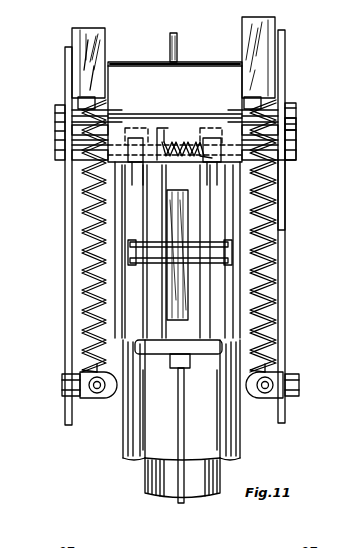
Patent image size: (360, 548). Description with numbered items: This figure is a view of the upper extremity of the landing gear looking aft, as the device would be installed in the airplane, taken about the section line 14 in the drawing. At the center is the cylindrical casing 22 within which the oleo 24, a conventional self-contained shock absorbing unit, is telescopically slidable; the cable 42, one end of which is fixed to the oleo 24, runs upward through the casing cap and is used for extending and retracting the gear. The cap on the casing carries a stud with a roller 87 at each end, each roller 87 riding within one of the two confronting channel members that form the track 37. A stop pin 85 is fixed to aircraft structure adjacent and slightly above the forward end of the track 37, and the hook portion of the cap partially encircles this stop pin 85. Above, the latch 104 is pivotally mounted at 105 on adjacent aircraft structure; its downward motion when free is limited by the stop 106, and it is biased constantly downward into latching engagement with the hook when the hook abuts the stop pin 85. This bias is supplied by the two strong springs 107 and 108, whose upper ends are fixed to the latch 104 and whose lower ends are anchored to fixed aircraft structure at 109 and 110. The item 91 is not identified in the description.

The section line 14- 14 is at (184, 20).
The latch 104 is at (125, 68).
The anchor point on fixed aircraft structure 109 is at (99, 402).
The anchor point on fixed aircraft structure 110 is at (266, 400).
The roller 87 is at (82, 178).
The stop pin 85 is at (288, 103).
The stop 106 is at (297, 126).
The pivot 105 is at (297, 147).
The spring 108 is at (88, 258).
The spring 107 is at (272, 265).
The track 37 is at (280, 231).
The latch mechanism 91 is at (352, 345).
The cylindrical casing 22 is at (120, 445).
The cable 42 is at (180, 422).
The oleo 24 is at (145, 482).